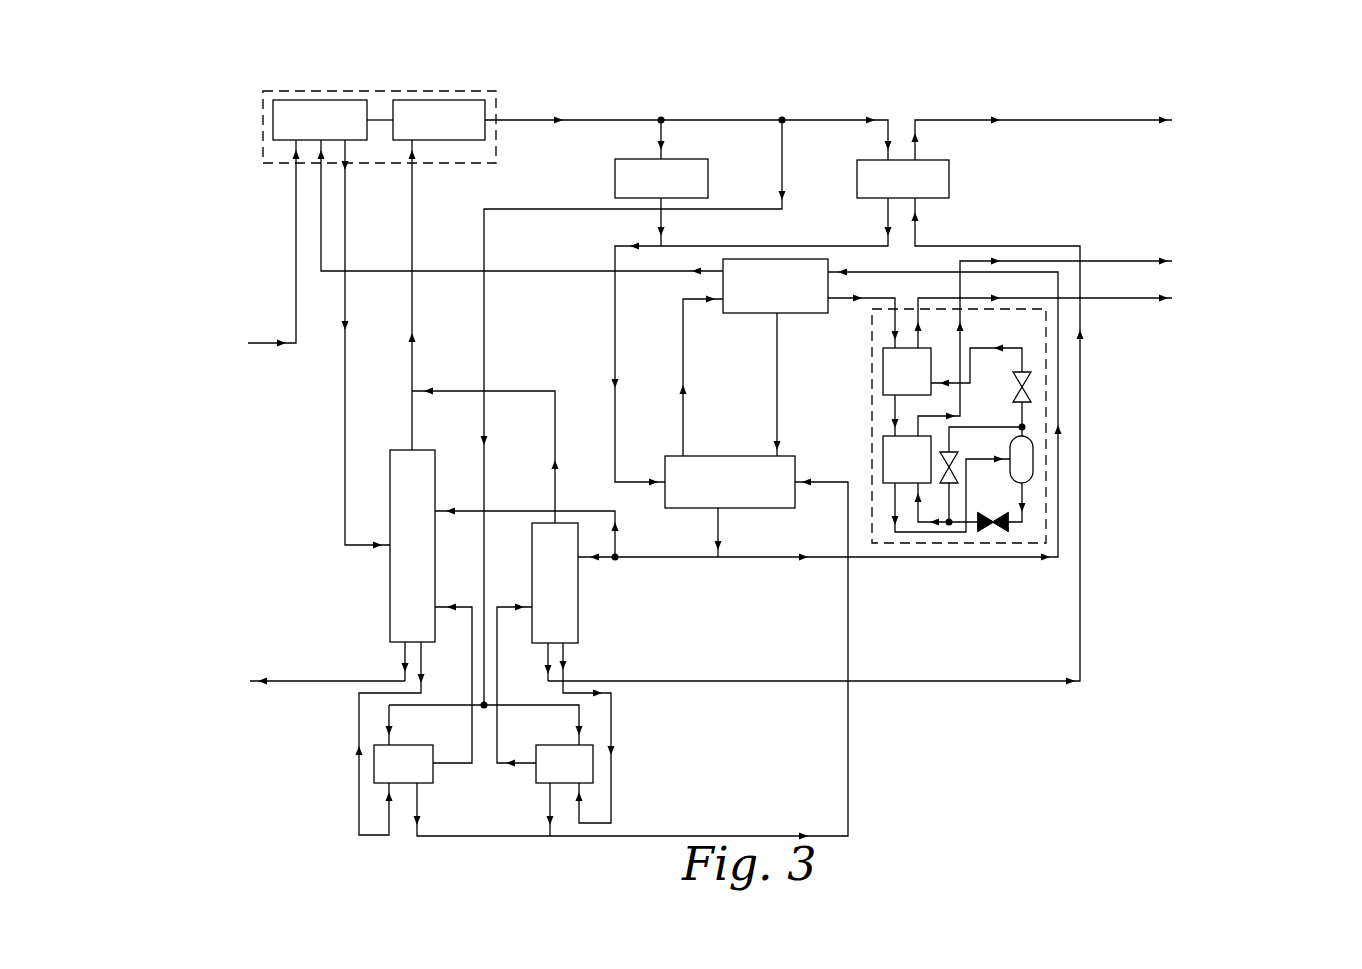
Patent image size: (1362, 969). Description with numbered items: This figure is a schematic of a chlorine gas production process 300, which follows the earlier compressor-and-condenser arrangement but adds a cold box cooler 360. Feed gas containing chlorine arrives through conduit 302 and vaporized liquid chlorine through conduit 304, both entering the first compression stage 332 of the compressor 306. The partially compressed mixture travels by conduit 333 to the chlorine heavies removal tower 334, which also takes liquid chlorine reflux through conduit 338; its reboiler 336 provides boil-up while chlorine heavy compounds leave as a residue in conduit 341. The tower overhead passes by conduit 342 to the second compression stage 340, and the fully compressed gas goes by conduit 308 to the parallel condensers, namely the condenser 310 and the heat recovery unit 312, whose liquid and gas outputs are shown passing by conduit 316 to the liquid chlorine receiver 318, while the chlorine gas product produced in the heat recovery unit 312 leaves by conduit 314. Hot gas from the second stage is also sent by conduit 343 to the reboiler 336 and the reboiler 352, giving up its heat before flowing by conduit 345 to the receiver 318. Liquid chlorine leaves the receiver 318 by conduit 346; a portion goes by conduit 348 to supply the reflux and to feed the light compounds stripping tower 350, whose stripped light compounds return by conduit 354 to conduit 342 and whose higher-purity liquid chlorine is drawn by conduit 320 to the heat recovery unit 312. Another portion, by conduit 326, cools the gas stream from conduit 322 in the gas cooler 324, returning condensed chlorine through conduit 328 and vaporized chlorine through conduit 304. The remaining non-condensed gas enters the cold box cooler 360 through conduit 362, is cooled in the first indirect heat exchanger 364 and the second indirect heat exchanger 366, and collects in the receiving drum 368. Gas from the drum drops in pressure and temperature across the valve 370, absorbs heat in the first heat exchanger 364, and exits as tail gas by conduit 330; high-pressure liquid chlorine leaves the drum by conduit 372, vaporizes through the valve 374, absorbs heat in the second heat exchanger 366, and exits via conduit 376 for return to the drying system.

The process 300 is at (1280, 102).
The conduit 302 is at (286, 238).
The conduit 304 is at (522, 269).
The compressor 306 is at (258, 105).
The conduit 308 is at (716, 118).
The condenser 310 is at (643, 190).
The heat recovery unit 312 is at (885, 190).
The overhead product stream 314 is at (1138, 118).
The bottoms stream 316 is at (828, 243).
The liquid chlorine receiver 318 is at (712, 497).
The conduit 320 is at (1089, 462).
The conduit 322 is at (692, 350).
The gas cooler 324 is at (758, 302).
The conduit 326 is at (928, 563).
The conduit 328 is at (787, 378).
The conduit 330 is at (1138, 302).
The first compression stage 332 is at (302, 137).
The conduit 333 is at (339, 435).
The chlorine heavies removal tower 334 is at (394, 558).
The reboiler 336 is at (385, 775).
The conduit 338 is at (522, 509).
The second compression stage 340 is at (421, 137).
The conduit 341 is at (350, 678).
The conduit 342 is at (404, 238).
The conduit 343 is at (789, 163).
The conduit 345 is at (706, 831).
The conduit 346 is at (728, 520).
The conduit 348 is at (662, 560).
The light compounds stripping tower 350 is at (537, 594).
The reboiler 352 is at (547, 775).
The conduit 354 is at (522, 389).
The cold box cooler 360 is at (869, 425).
The conduit 362 is at (884, 290).
The first indirect heat exchanger 364 is at (889, 382).
The second indirect heat exchanger 366 is at (889, 470).
The receiving drum 368 is at (1007, 448).
The valve 370 is at (1017, 385).
The conduit 372 is at (1015, 494).
The valve 374 is at (996, 526).
The conduit 376 is at (1138, 260).